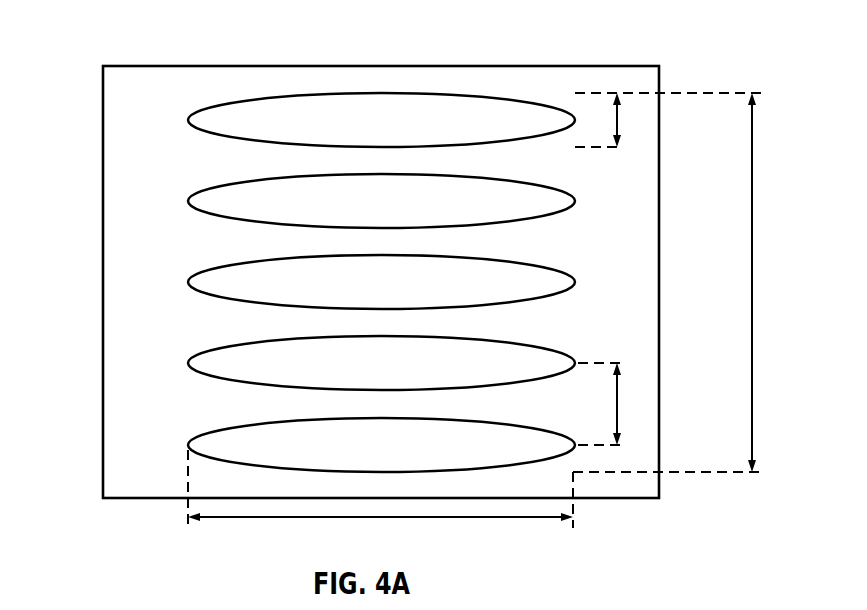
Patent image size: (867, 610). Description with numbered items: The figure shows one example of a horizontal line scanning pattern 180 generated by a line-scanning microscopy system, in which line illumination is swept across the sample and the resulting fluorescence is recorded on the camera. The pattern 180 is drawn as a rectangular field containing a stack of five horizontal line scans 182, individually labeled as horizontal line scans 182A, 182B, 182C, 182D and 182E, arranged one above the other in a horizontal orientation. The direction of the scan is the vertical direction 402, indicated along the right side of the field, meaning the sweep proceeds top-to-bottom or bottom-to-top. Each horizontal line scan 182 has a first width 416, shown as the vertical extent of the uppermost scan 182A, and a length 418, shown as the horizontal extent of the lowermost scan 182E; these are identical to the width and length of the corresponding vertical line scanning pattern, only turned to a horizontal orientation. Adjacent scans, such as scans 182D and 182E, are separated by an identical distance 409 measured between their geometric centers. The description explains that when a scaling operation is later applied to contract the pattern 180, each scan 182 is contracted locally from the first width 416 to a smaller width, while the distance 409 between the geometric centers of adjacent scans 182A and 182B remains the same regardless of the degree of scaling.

The horizontal line scanning pattern 180 is at (210, 37).
The horizontal line scans 182 is at (538, 74).
The fluorescent horizontal line scan 182A is at (188, 120).
The fluorescent horizontal line scan 182B is at (188, 201).
The horizontal line scan 182C is at (188, 282).
The horizontal line scan 182D is at (188, 363).
The horizontal line scan 182E is at (188, 445).
The first width 416 is at (617, 120).
The distance 409 is at (617, 405).
The vertical direction 402 is at (752, 190).
The length 418 is at (218, 518).